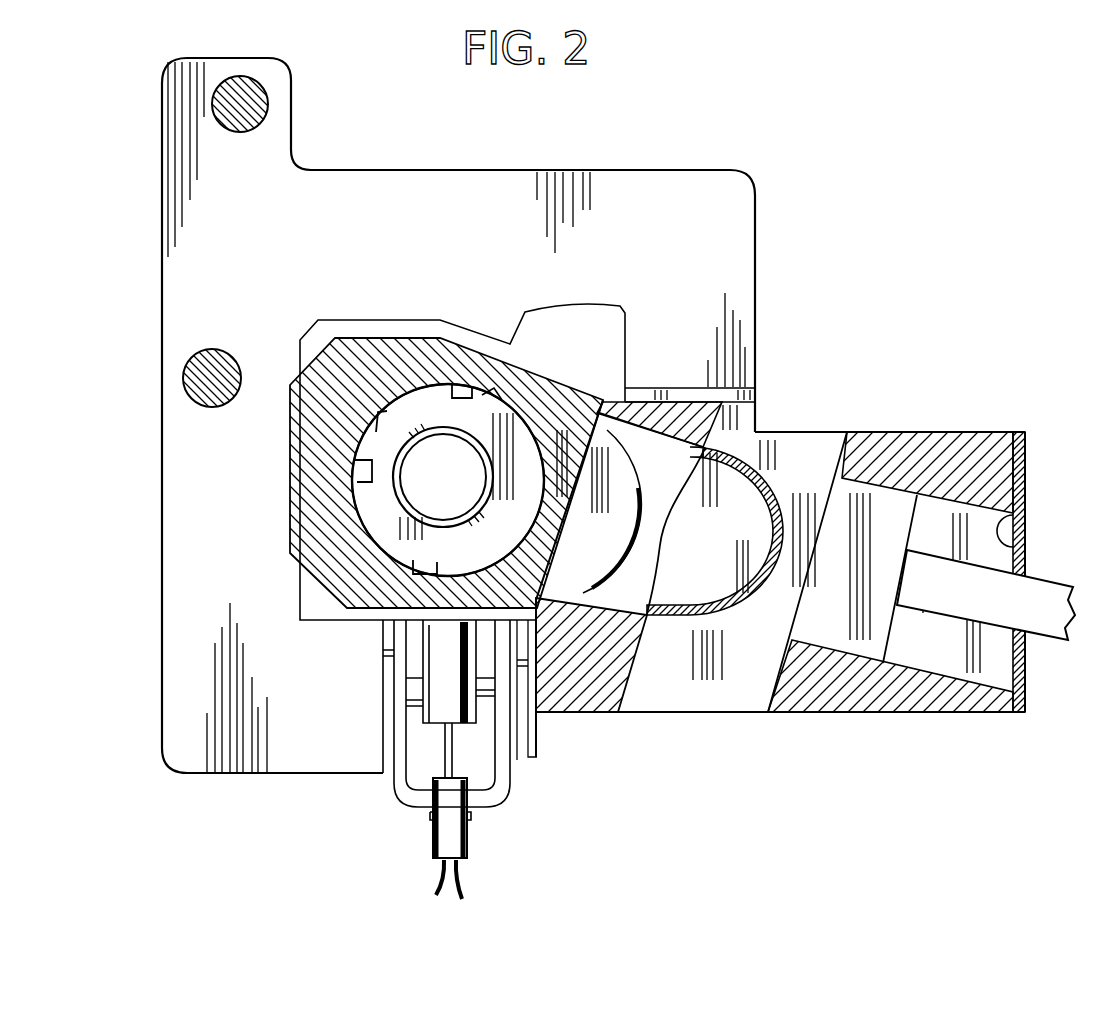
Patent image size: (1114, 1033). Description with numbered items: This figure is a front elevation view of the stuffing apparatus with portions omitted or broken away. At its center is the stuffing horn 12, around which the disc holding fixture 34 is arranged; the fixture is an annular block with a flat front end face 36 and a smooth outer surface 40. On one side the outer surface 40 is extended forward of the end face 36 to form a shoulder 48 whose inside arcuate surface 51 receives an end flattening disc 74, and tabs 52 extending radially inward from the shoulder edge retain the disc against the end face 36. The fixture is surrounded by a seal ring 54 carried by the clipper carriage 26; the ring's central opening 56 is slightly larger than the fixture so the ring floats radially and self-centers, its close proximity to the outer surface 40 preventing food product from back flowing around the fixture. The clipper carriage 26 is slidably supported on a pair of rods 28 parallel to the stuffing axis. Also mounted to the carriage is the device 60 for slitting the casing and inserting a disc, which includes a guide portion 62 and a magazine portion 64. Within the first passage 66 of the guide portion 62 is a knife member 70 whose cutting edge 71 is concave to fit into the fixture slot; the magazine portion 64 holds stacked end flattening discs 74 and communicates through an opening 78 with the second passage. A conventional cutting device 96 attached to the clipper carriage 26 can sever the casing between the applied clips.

The stuffing horn 12 is at (480, 462).
The clipper carriage 26 is at (481, 183).
The rods 28 is at (266, 92).
The disc holding fixture 34 is at (541, 527).
The front end face 36 is at (505, 547).
The outer surface 40 is at (522, 430).
The shoulder 48 is at (347, 444).
The inside arcuate surface 51 is at (370, 520).
The tabs 52 is at (446, 402).
The seal ring 54 is at (405, 350).
The central opening 56 is at (487, 400).
The device for slitting the casing and inserting an end flattening disc 60 is at (855, 384).
The guide portion 62 is at (920, 432).
The magazine portion 64 is at (778, 492).
The first passage 66 is at (1020, 542).
The knife member 70 is at (681, 479).
The cutting edge 71 is at (613, 560).
The end flattening disc 74 is at (738, 538).
The opening 78 is at (730, 600).
The cutting device 96 is at (513, 783).